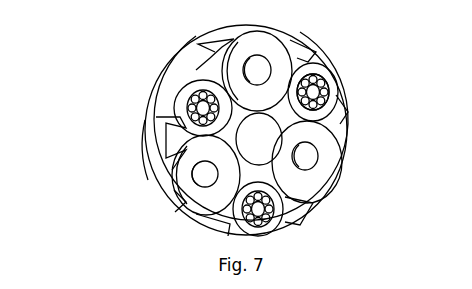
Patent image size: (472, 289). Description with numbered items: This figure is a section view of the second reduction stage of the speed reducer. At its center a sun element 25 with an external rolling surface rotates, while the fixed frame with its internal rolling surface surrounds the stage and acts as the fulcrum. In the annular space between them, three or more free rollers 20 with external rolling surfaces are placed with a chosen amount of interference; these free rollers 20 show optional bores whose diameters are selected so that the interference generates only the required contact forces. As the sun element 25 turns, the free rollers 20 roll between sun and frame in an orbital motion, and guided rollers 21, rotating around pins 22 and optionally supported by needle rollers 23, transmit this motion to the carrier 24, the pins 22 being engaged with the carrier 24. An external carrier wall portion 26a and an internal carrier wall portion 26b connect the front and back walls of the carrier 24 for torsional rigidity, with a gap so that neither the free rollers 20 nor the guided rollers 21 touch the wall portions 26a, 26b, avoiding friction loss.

The free rollers 20 is at (240, 30).
The guided rollers 21 is at (175, 85).
The pins 22 is at (313, 93).
The needle rollers 23 is at (322, 79).
The carrier 24 is at (152, 138).
The sun element 25 is at (260, 138).
The external carrier wall portion 26a is at (142, 149).
The internal carrier wall portion 26b is at (237, 170).